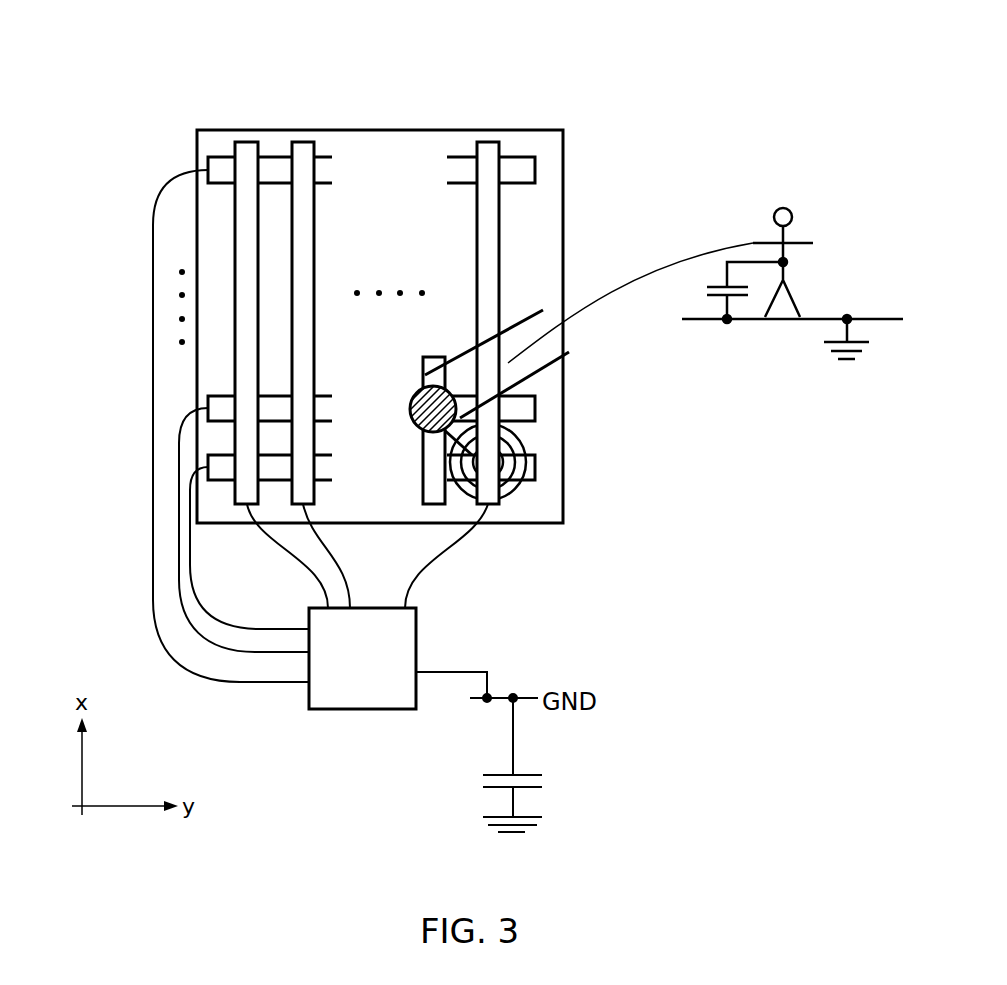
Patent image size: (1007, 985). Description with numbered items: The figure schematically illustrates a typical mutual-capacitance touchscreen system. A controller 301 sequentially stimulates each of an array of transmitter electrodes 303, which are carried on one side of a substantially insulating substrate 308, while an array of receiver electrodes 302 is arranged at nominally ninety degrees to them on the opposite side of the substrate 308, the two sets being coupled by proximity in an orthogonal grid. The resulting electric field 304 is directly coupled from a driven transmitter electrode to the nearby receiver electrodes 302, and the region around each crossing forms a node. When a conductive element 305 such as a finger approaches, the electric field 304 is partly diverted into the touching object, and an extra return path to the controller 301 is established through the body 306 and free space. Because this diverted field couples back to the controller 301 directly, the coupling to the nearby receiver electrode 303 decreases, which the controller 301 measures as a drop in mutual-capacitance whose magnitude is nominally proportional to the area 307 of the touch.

The controller 301 is at (355, 709).
The receiver electrodes 302 is at (490, 88).
The transmitter electrodes 303 is at (115, 163).
The electric field 304 is at (508, 490).
The conductive element 305 is at (435, 437).
The body 306 is at (795, 235).
The area of the touch 307 is at (415, 405).
The substantially insulating substrate 308 is at (563, 145).